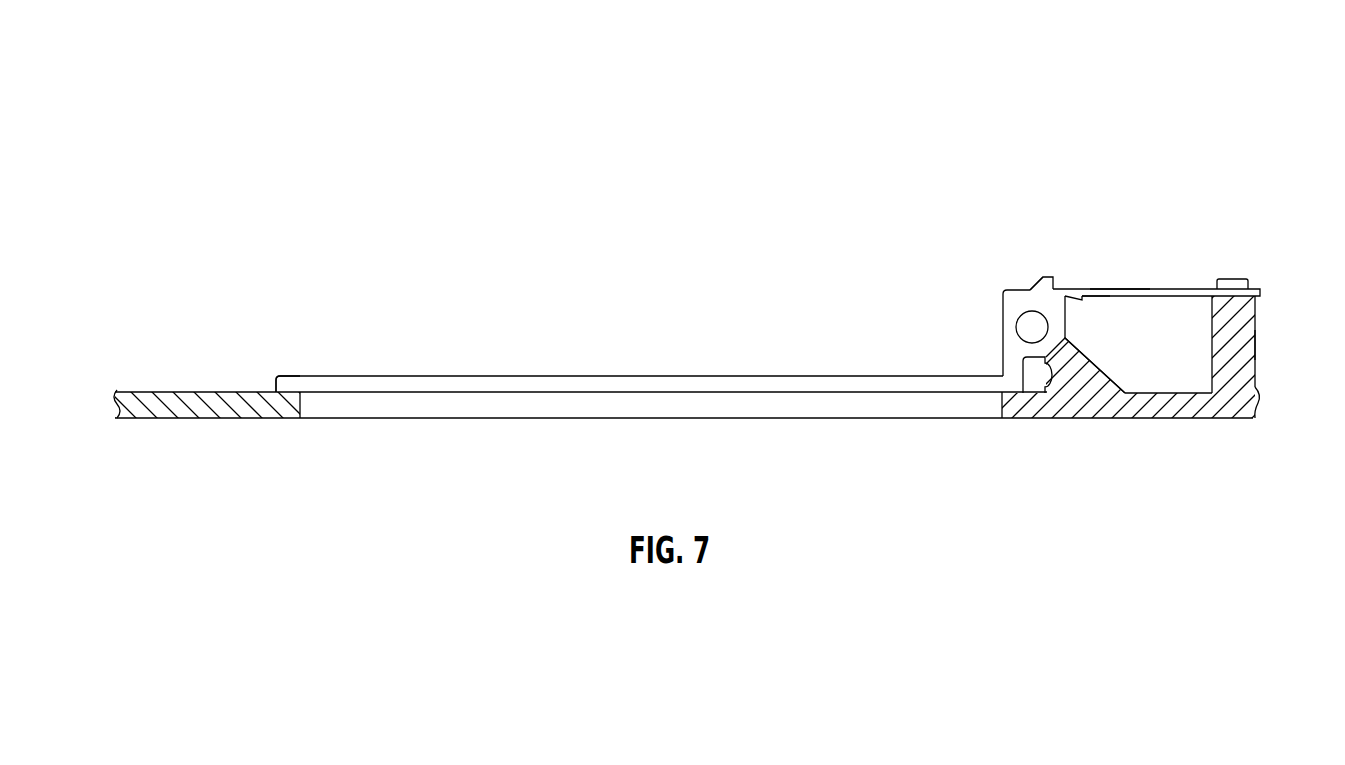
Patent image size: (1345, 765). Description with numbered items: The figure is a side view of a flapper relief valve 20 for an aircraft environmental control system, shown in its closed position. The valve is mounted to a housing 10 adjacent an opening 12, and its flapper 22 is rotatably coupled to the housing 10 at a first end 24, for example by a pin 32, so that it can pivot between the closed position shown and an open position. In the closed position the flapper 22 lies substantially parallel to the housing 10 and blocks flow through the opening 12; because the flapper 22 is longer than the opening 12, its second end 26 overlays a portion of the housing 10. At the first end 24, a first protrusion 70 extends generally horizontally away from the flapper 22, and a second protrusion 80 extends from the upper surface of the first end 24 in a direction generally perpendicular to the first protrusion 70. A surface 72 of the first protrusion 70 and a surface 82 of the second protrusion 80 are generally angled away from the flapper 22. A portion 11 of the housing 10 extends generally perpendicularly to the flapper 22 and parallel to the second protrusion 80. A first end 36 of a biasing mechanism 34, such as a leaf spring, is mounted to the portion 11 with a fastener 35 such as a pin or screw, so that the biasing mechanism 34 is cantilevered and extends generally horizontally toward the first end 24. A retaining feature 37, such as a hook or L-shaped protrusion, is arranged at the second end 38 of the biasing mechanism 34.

The housing 10 is at (1068, 398).
The portion of the housing 11 is at (1240, 355).
The opening 12 is at (893, 410).
The flapper relief valve 20 is at (105, 110).
The flapper 22 is at (572, 378).
The first end 24 is at (1003, 298).
The second end 26 is at (275, 378).
The pin 32 is at (1018, 328).
The biasing mechanism 34 is at (1165, 289).
The fastener 35 is at (1233, 278).
The first end of the biasing mechanism 36 is at (1256, 305).
The retaining feature 37 is at (1083, 298).
The second end of the biasing mechanism 38 is at (1103, 289).
The first protrusion 70 is at (1067, 296).
The surface of the first protrusion 72 is at (1068, 298).
The second protrusion 80 is at (1043, 277).
The surface of the second protrusion 82 is at (1038, 282).